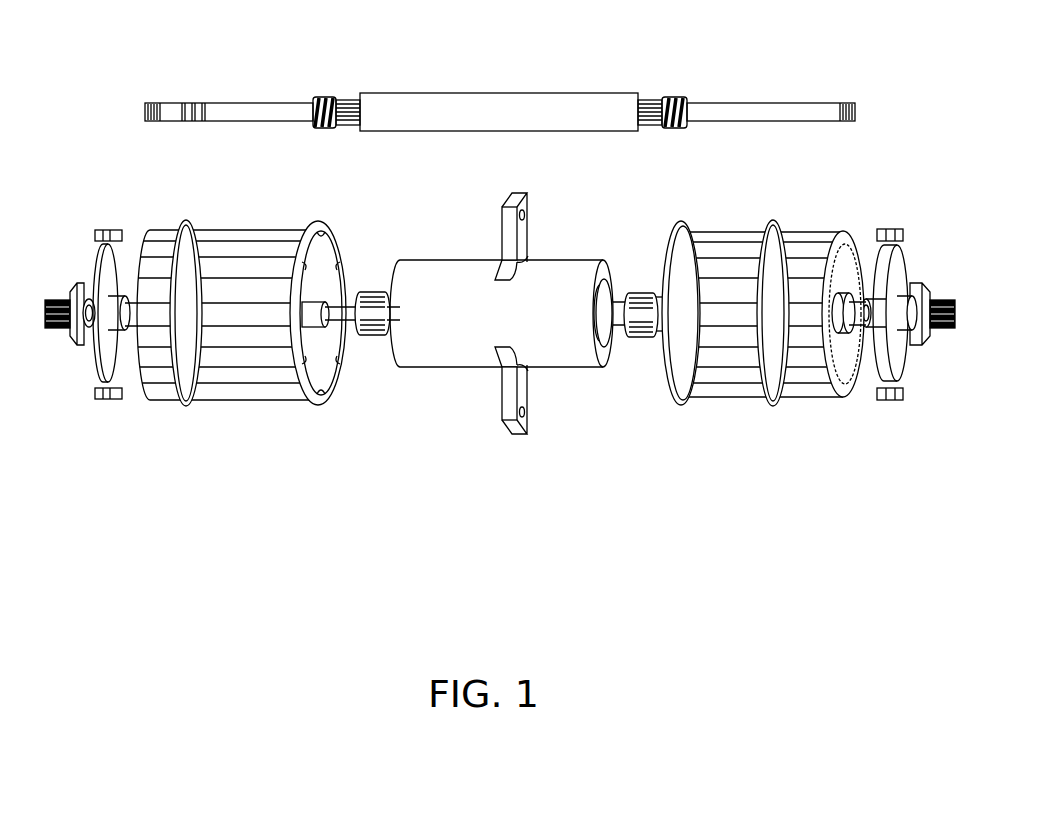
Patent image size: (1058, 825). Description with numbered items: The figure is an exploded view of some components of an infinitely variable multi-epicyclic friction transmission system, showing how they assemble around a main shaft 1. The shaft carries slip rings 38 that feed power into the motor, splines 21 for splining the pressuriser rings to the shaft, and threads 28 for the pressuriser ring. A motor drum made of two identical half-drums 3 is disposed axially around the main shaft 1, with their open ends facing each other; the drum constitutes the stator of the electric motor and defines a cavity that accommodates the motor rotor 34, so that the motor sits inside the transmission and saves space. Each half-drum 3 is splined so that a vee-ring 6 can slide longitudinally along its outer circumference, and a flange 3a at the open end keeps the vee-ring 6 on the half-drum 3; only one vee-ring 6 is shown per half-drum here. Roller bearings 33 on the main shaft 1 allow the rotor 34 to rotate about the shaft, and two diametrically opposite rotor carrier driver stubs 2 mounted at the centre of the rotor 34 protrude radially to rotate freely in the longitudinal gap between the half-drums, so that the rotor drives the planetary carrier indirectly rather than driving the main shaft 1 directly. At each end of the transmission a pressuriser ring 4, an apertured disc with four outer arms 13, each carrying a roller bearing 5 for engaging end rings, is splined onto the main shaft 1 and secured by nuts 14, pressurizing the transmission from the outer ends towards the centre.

The main shaft 1 is at (797, 110).
The slip rings 38 is at (202, 103).
The threads 28 is at (325, 97).
The splines 21 is at (348, 98).
The nuts 14 is at (72, 293).
The pressuriser ring 4 is at (115, 270).
The outer arms 13 is at (104, 229).
The roller bearing 5 is at (103, 399).
The half-drum 3 is at (251, 252).
The vee-ring 6 is at (203, 222).
The flange 3a is at (318, 222).
The roller bearings 33 is at (372, 300).
The motor rotor 34 is at (563, 282).
The rotor carrier driver stubs 2 is at (505, 233).